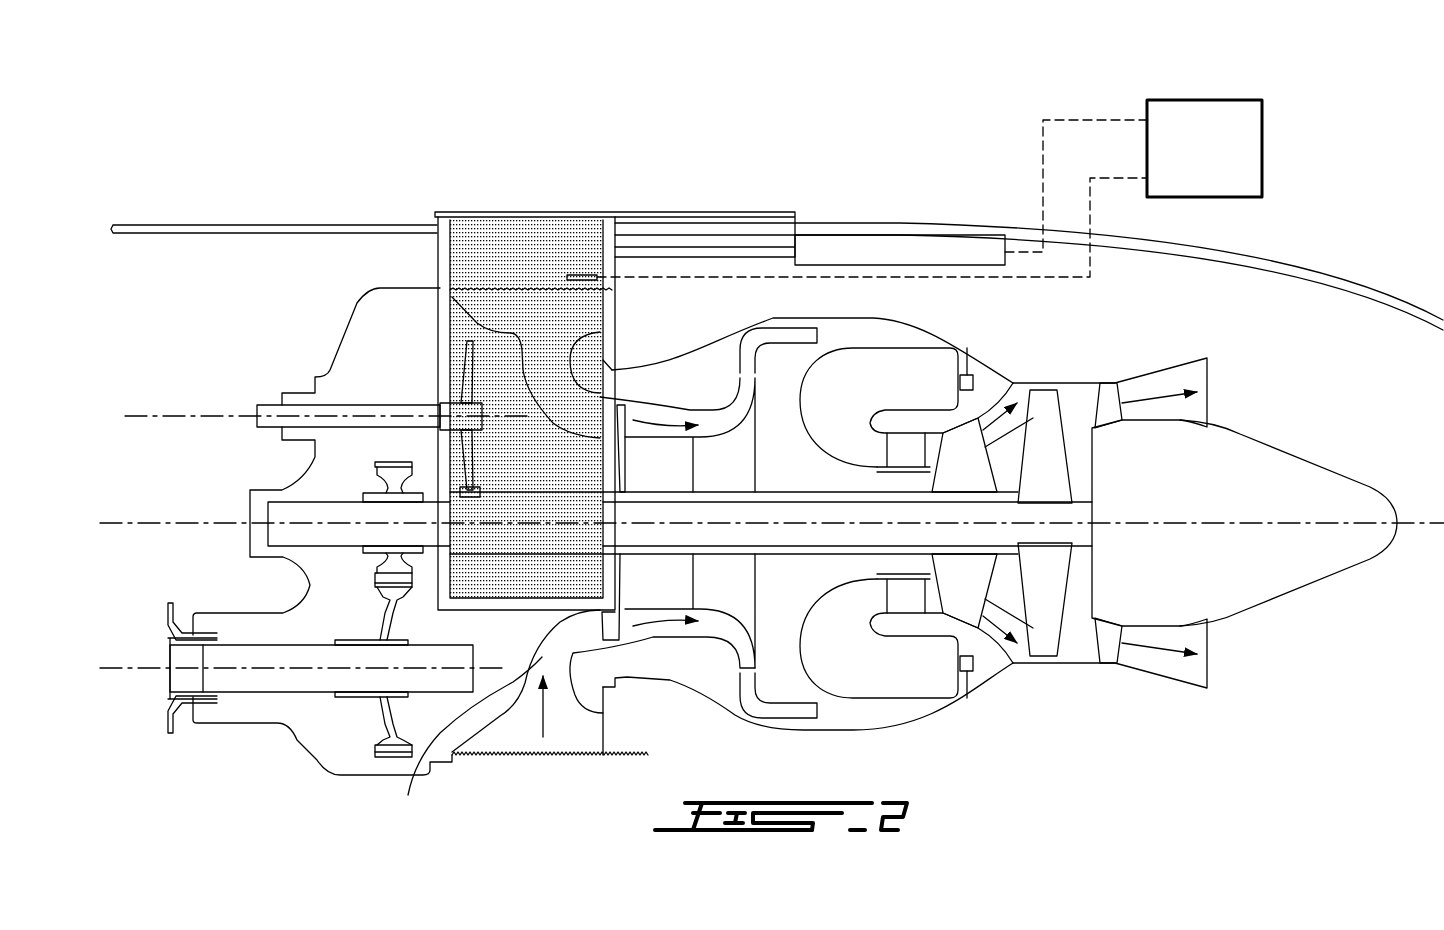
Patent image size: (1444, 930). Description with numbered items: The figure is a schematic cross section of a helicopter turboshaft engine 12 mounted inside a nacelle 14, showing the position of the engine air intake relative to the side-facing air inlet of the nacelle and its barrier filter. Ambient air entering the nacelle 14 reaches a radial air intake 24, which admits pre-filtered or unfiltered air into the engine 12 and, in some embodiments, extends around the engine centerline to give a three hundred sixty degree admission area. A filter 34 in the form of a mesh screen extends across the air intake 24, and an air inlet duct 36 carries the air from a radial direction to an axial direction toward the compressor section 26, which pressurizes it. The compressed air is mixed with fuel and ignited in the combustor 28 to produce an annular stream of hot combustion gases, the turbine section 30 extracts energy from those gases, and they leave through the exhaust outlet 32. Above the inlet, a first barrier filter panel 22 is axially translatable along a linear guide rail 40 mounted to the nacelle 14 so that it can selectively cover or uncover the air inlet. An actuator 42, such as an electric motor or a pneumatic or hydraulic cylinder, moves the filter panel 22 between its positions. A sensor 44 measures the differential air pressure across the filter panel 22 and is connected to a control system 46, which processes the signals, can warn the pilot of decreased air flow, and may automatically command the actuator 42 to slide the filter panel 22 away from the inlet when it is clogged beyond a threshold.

The turboshaft engine 12 is at (1033, 709).
The nacelle 14 is at (199, 222).
The first barrier filter panel 22 is at (463, 325).
The radial air intake 24 is at (548, 763).
The compressor section 26 is at (654, 641).
The combustor 28 is at (912, 680).
The turbine section 30 is at (1063, 368).
The exhaust outlet 32 is at (1207, 393).
The filter 34 is at (480, 762).
The air inlet duct 36 is at (408, 795).
The linear guide rail 40 is at (707, 212).
The actuator 42 is at (893, 248).
The sensor 44 is at (580, 273).
The control system 46 is at (1262, 148).